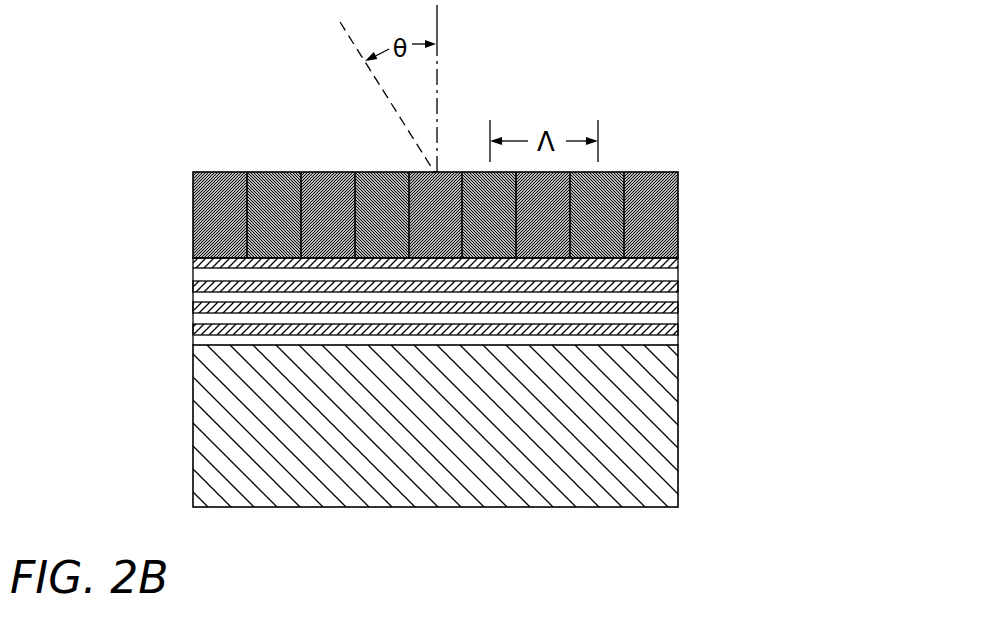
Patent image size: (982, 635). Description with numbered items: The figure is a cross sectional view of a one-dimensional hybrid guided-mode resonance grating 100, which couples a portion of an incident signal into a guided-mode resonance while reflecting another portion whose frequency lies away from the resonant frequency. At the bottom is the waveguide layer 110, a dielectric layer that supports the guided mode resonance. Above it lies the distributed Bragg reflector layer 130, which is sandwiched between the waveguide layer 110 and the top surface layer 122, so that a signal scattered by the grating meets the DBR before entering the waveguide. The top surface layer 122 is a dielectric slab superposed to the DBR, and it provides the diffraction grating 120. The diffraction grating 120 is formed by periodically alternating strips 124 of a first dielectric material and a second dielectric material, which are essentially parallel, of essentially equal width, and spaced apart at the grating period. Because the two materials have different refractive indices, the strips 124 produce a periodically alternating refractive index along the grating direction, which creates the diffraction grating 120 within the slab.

The hybrid guided-mode resonance grating 100 is at (739, 80).
The waveguide layer 110 is at (677, 420).
The diffraction grating 120 is at (288, 153).
The top surface layer 122 is at (484, 192).
The strips 124 is at (613, 173).
The distributed Bragg reflector layer 130 is at (688, 258).